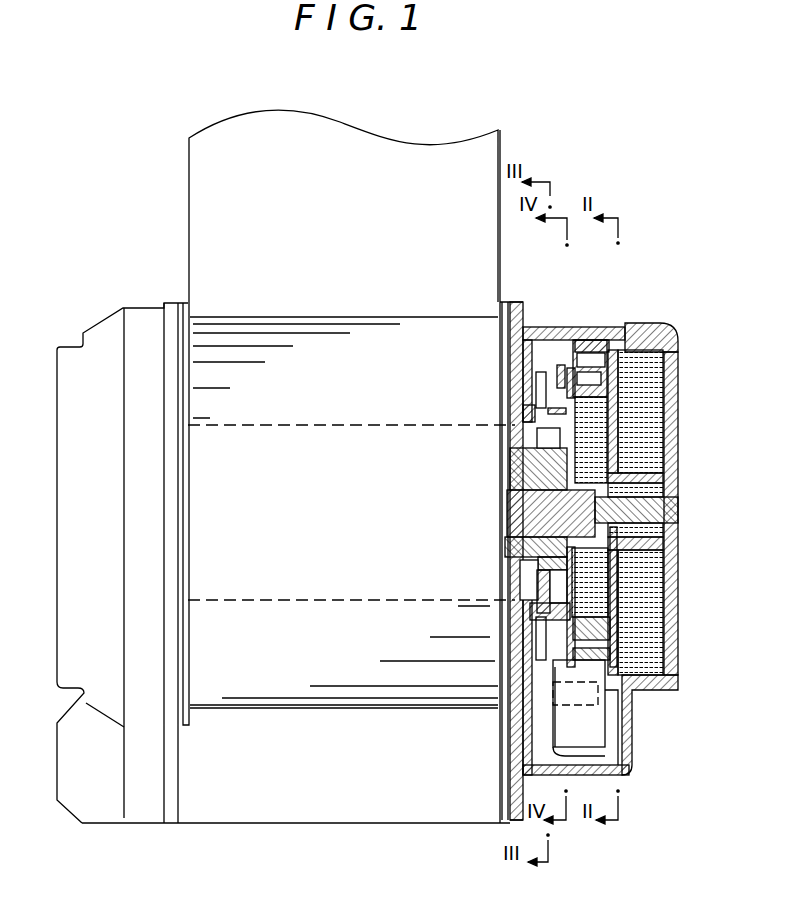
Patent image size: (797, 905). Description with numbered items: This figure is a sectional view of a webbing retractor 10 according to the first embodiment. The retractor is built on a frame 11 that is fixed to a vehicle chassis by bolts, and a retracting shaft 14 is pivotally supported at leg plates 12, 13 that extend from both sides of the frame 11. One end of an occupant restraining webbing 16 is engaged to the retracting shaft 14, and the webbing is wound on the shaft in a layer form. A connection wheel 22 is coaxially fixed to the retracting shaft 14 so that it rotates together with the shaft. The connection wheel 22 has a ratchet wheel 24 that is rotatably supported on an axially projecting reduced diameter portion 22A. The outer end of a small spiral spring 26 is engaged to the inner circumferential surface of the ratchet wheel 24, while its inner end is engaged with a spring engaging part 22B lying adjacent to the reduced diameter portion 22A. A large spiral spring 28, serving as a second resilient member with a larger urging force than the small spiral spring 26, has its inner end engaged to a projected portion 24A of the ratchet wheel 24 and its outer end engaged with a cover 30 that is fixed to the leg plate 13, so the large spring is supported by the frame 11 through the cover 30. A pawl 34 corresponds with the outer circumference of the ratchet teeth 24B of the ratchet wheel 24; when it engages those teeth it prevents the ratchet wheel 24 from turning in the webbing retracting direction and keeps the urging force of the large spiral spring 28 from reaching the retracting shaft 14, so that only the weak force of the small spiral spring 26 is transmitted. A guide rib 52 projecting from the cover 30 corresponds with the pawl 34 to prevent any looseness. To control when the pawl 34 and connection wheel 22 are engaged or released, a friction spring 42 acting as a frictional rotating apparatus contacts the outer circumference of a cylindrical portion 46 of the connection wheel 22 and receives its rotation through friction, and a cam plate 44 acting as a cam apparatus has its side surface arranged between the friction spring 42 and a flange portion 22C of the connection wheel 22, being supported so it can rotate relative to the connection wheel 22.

The webbing retractor 10 is at (570, 182).
The frame 11 is at (351, 806).
The leg plate 12 is at (178, 771).
The leg plate 13 is at (510, 776).
The retracting shaft 14 is at (340, 424).
The occupant restraining webbing 16 is at (490, 253).
The connection wheel 22 is at (560, 445).
The reduced diameter portion 22A is at (665, 516).
The spring engaging part 22B is at (660, 487).
The flange portion 22C is at (572, 366).
The ratchet wheel 24 is at (630, 330).
The projected portion 24A is at (660, 478).
The ratchet teeth 24B is at (602, 340).
The small spiral spring 26 is at (540, 438).
The large spiral spring 28 is at (650, 400).
The cover 30 is at (656, 341).
The pawl 34 is at (600, 722).
The friction spring 42 is at (541, 372).
The cam plate 44 is at (562, 366).
The cylindrical portion 46 is at (517, 423).
The guide rib 52 is at (612, 708).